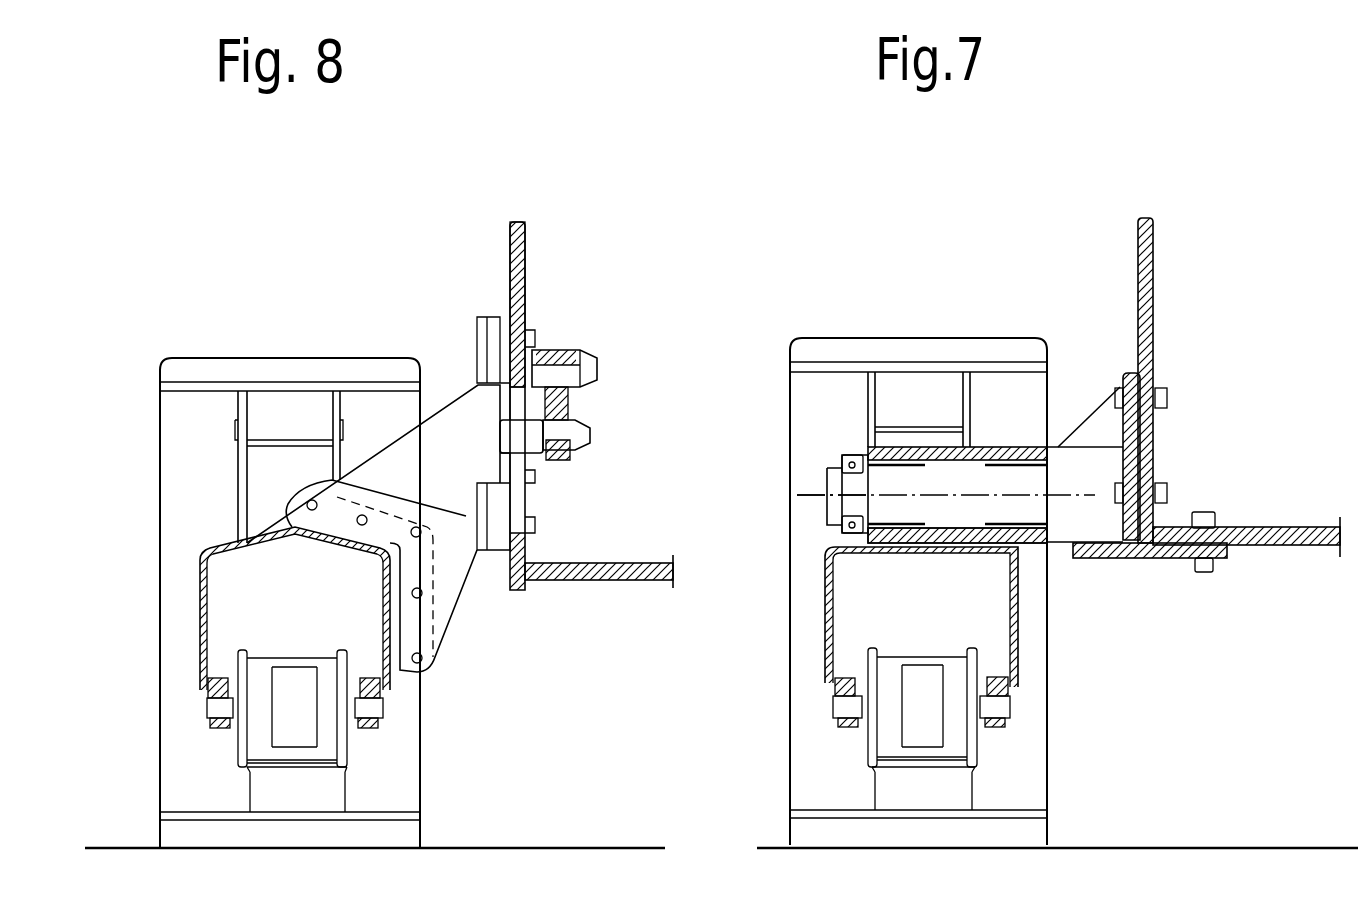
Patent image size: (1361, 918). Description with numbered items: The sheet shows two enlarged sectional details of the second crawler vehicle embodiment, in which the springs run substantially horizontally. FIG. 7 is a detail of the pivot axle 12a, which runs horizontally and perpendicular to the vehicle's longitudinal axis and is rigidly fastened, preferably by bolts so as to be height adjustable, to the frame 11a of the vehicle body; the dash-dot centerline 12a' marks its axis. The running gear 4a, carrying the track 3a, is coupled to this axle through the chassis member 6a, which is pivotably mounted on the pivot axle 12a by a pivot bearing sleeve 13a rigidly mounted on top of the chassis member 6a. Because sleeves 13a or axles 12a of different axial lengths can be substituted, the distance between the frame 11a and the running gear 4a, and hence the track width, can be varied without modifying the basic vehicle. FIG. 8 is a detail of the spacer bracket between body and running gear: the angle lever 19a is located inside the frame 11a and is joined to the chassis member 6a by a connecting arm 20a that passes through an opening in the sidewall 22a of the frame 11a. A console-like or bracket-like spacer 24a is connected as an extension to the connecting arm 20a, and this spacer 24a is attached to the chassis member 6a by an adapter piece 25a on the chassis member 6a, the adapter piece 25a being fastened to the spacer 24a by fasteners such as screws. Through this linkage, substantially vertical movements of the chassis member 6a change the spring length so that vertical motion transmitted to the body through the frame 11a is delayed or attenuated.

In FIG. 8, the track 3a is at (205, 368).
In FIG. 7, the track 3a is at (830, 348).
In FIG. 7, the running gear 4a is at (822, 593).
In FIG. 8, the chassis member 6a is at (203, 613).
In FIG. 7, the chassis member 6a is at (827, 633).
In FIG. 8, the frame 11a is at (519, 226).
In FIG. 7, the frame 11a is at (1150, 262).
In FIG. 7, the pivot axle 12a is at (1023, 596).
In FIG. 7, the tube axis 12a' is at (791, 442).
In FIG. 7, the pivot bearing sleeve 13a is at (993, 447).
In FIG. 8, the angle lever 19a is at (563, 348).
In FIG. 8, the connecting arm 20a is at (523, 443).
In FIG. 8, the sidewall 22a is at (511, 278).
In FIG. 8, the spacer 24a is at (433, 437).
In FIG. 8, the adapter piece 25a is at (323, 487).